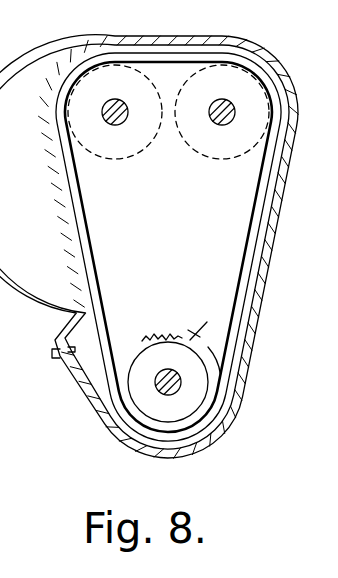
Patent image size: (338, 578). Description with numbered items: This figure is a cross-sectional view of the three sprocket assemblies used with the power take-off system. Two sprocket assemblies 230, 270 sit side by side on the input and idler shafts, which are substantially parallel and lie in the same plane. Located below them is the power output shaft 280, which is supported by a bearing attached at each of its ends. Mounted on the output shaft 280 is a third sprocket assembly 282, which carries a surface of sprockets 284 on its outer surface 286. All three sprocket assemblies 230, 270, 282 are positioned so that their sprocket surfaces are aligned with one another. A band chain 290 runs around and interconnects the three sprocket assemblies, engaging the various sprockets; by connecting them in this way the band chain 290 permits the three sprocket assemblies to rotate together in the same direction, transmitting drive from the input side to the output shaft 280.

The sprocket assembly 230 is at (137, 151).
The sprocket assembly 270 is at (206, 151).
The power output shaft 280 is at (180, 387).
The third sprocket assembly 282 is at (164, 333).
The sprockets 284 is at (196, 321).
The outer surface 286 is at (121, 362).
The band chain 290 is at (250, 248).